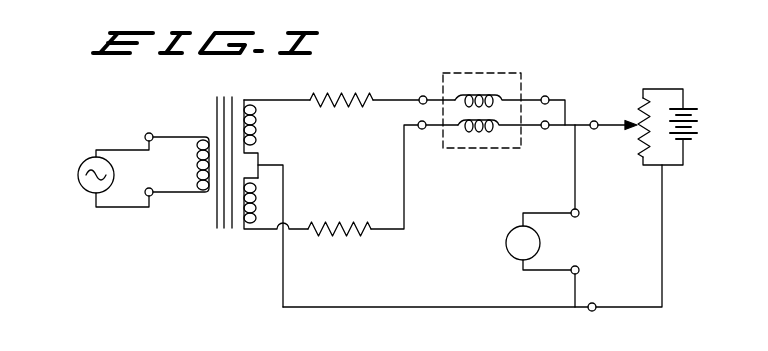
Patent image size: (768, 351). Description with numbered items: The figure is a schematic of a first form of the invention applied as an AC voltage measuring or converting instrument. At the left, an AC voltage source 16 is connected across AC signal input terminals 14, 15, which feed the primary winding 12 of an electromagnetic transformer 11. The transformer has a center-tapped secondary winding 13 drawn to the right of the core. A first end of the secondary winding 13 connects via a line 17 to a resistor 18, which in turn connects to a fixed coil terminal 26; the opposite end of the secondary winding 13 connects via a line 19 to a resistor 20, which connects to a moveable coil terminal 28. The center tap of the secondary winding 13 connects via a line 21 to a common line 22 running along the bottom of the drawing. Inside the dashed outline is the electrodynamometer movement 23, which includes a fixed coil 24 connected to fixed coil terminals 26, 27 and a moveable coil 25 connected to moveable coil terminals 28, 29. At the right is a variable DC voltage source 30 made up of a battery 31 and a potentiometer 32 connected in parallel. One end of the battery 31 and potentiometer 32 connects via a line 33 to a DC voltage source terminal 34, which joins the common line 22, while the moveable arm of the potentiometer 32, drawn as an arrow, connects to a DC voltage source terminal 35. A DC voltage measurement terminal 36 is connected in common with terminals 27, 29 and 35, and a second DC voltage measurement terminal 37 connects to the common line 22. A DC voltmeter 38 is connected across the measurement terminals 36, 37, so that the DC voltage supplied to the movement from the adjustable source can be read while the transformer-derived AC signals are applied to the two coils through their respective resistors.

The electromagnetic transformer 11 is at (217, 109).
The primary winding 12 is at (203, 135).
The center-tapped secondary winding 13 is at (272, 97).
The AC signal input terminal 14 is at (145, 136).
The AC signal input terminal 15 is at (151, 196).
The AC voltage source 16 is at (80, 166).
The line 17 is at (283, 102).
The resistor 18 is at (346, 93).
The line 19 is at (277, 231).
The resistor 20 is at (357, 224).
The line 21 is at (284, 279).
The common line 22 is at (429, 306).
The electrodynamometer movement 23 is at (508, 73).
The fixed coil 24 is at (460, 96).
The moveable coil 25 is at (489, 128).
The fixed coil terminal 26 is at (423, 95).
The fixed coil terminal 27 is at (546, 95).
The moveable coil terminal 28 is at (418, 122).
The moveable coil terminal 29 is at (546, 130).
The variable DC voltage source 30 is at (671, 89).
The battery 31 is at (697, 117).
The potentiometer 32 is at (640, 106).
The line 33 is at (663, 241).
The DC voltage source terminal 34 is at (593, 311).
The DC voltage source terminal 35 is at (598, 129).
The DC voltage measurement terminal 36 is at (571, 209).
The DC voltage measurement terminal 37 is at (579, 268).
The DC voltmeter 38 is at (506, 243).